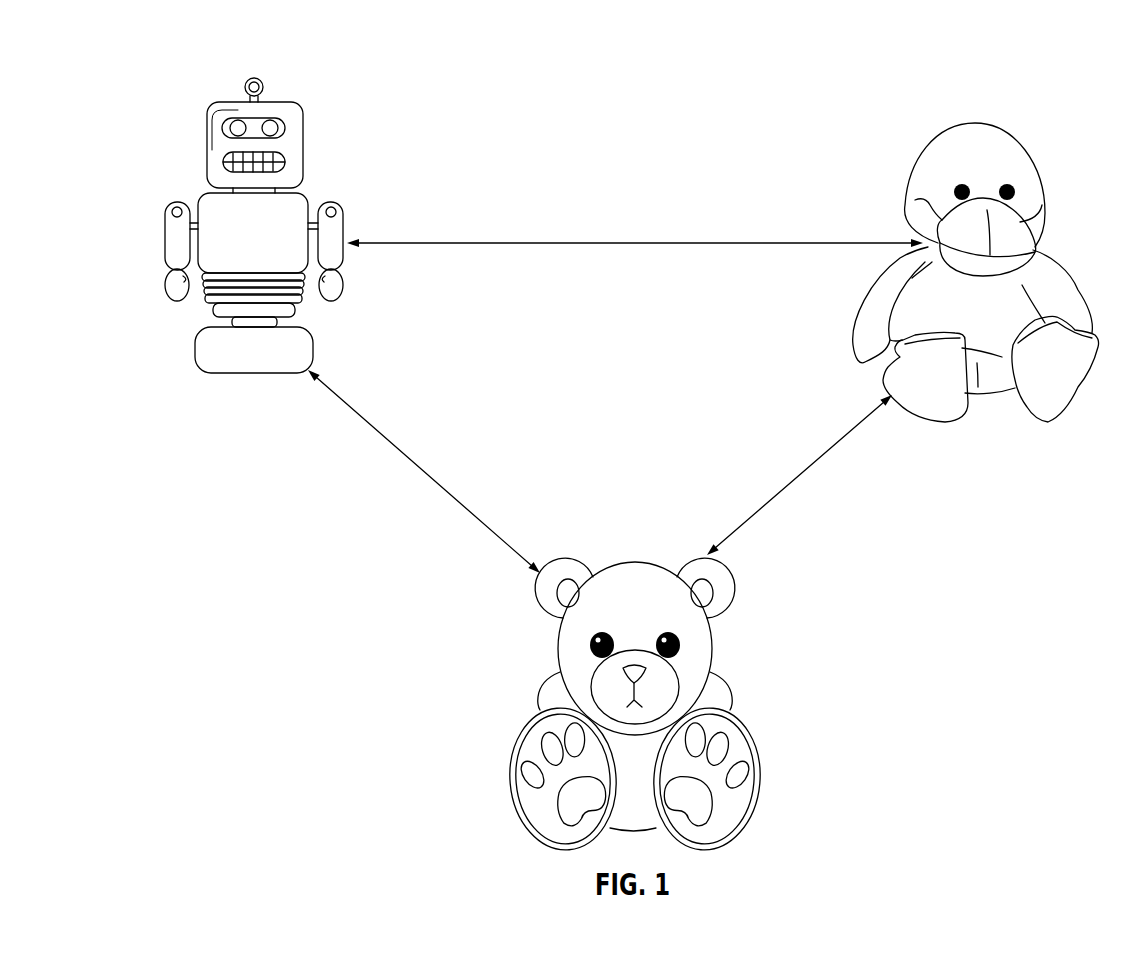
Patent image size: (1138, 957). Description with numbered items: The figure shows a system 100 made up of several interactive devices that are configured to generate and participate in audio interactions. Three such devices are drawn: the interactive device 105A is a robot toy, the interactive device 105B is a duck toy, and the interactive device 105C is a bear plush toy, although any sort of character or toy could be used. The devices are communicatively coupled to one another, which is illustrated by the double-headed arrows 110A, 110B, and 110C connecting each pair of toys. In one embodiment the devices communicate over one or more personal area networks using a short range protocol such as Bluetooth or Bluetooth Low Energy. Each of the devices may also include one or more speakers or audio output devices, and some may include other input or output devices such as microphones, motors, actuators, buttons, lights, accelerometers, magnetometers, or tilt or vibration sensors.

The system 100 is at (179, 54).
The interactive device 105A is at (278, 112).
The interactive device 105B is at (1008, 125).
The interactive device 105C is at (743, 725).
The arrow 110A is at (635, 242).
The arrow 110B is at (798, 480).
The arrow 110C is at (415, 465).